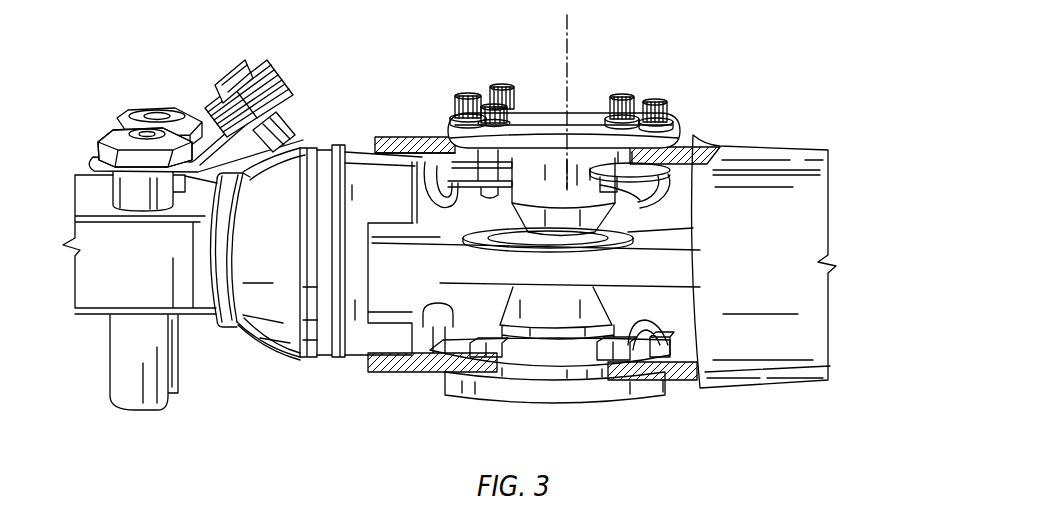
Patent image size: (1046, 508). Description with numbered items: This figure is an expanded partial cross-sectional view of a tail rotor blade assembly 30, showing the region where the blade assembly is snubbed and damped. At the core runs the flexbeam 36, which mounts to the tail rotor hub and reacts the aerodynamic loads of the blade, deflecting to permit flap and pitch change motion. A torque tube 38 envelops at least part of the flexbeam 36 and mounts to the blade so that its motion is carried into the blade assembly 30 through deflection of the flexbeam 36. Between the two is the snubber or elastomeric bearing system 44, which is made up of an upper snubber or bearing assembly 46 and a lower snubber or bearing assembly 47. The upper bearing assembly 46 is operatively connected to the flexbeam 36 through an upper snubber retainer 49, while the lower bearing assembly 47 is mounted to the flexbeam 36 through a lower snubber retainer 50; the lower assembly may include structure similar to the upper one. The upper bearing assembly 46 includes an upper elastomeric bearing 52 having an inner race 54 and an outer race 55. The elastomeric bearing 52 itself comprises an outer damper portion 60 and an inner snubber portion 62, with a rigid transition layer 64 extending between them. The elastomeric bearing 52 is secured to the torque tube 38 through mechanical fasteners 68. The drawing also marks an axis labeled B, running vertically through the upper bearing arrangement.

The tail rotor blade assembly 30 is at (718, 425).
The flexbeam 36 is at (678, 290).
The torque tube 38 is at (760, 372).
The elastomeric bearing system 44 is at (430, 385).
The upper bearing assembly 46 is at (667, 203).
The lower bearing assembly 47 is at (637, 303).
The upper snubber retainer 49 is at (488, 218).
The lower snubber retainer 50 is at (487, 297).
The upper elastomeric bearing 52 is at (627, 220).
The inner race 54 is at (605, 247).
The outer race 55 is at (538, 120).
The outer damper portion 60 is at (540, 163).
The inner snubber portion 62 is at (560, 215).
The rigid transition layer 64 is at (563, 207).
The mechanical fasteners 68 is at (650, 90).
The injector axis B is at (565, 60).